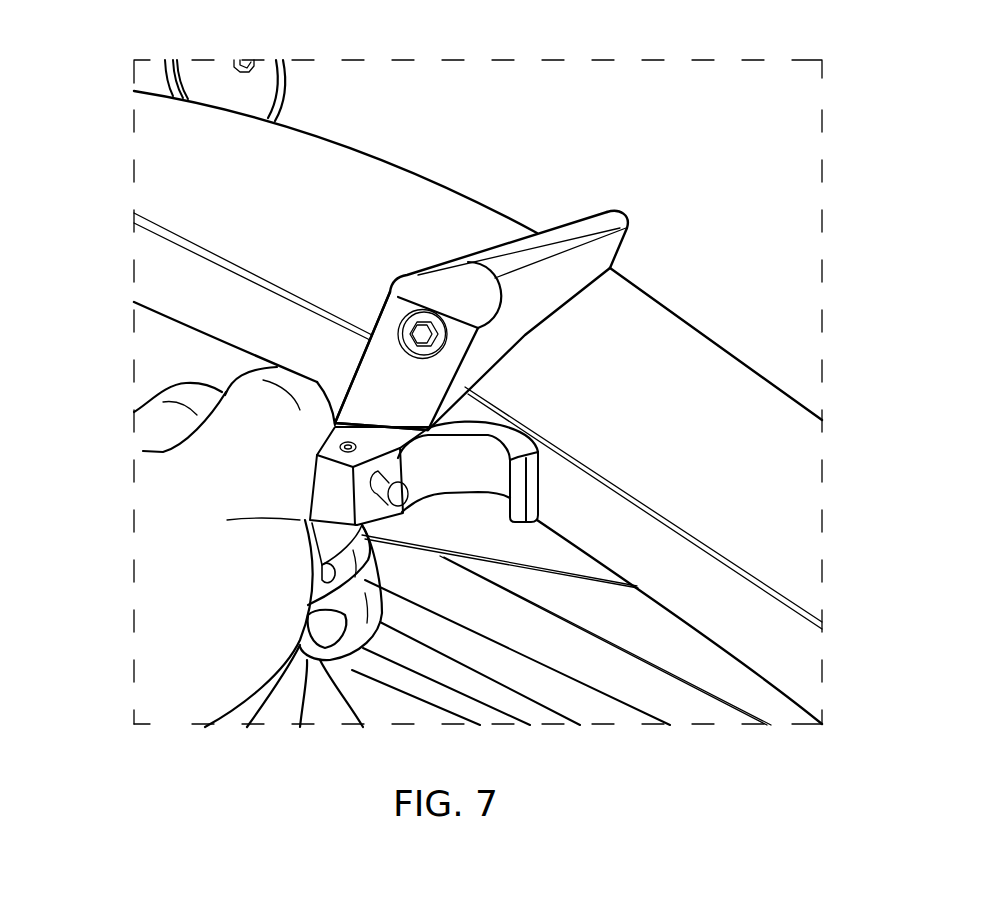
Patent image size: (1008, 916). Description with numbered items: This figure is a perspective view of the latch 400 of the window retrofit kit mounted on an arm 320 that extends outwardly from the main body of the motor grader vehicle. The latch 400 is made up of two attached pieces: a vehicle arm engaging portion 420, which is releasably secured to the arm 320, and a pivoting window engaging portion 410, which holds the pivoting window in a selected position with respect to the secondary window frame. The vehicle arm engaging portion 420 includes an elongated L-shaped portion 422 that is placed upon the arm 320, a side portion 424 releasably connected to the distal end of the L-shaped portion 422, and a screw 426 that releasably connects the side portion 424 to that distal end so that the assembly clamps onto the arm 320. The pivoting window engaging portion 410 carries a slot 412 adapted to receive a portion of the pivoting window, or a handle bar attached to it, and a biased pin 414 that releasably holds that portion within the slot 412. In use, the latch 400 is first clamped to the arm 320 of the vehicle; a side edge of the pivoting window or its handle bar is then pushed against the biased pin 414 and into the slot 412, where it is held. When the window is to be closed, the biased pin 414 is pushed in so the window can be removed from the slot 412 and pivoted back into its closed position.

The arm 320 is at (727, 420).
The latch 400 is at (461, 334).
The pivoting window engaging portion 410 is at (476, 497).
The slot 412 is at (455, 467).
The biased pin 414 is at (373, 482).
The vehicle arm engaging portion 420 is at (454, 217).
The elongated L-shaped portion 422 is at (560, 275).
The side portion 424 is at (353, 370).
The screw 426 is at (399, 319).